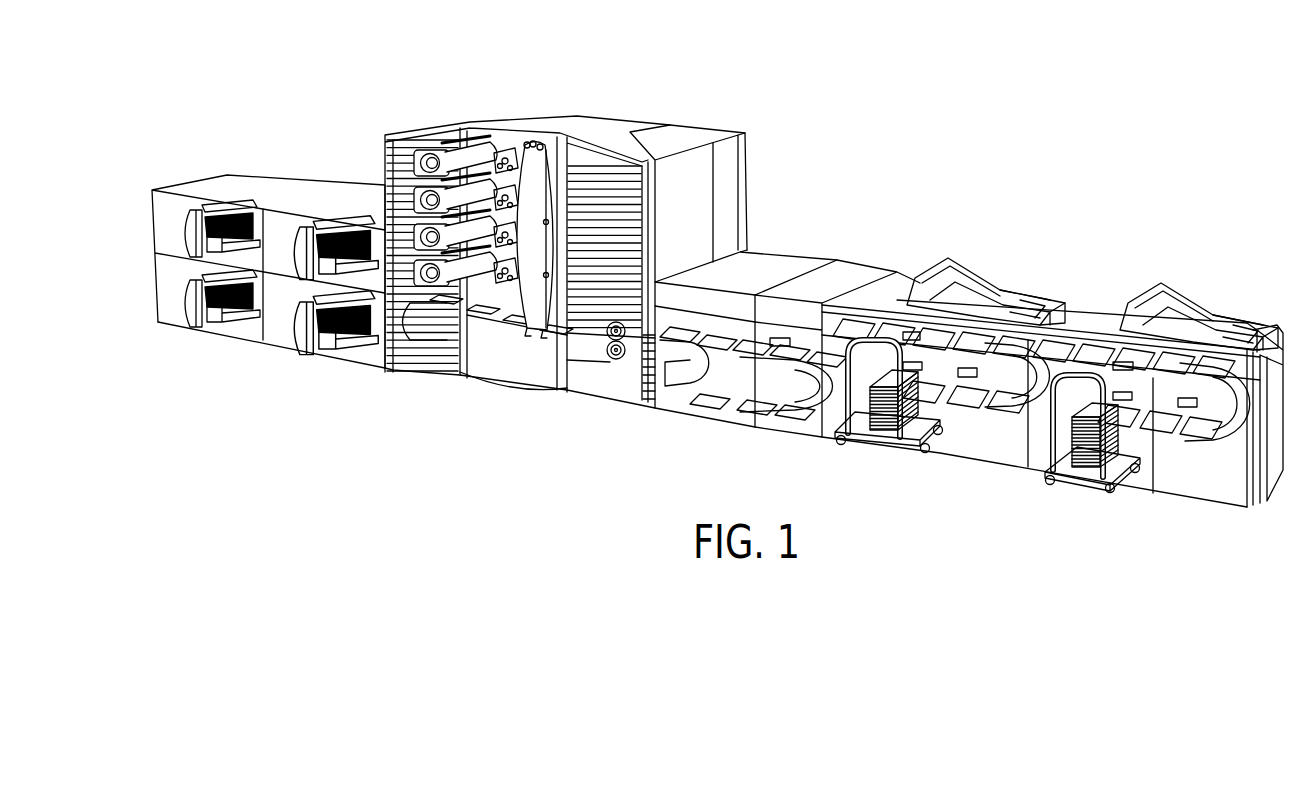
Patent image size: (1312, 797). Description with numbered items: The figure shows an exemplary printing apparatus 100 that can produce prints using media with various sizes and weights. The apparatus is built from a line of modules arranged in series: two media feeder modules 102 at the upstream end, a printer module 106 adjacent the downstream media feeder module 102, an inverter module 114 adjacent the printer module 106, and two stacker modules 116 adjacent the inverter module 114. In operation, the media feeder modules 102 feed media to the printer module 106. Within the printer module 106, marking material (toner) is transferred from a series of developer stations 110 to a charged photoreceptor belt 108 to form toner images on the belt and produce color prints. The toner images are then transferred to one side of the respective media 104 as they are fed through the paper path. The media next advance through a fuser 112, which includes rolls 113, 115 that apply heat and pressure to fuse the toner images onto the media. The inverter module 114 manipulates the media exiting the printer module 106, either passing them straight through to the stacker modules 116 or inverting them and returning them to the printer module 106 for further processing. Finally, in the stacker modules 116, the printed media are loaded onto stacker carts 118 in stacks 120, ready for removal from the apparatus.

The printing apparatus 100 is at (957, 76).
The media feeder module 102 is at (232, 202).
The media 104 is at (273, 217).
The printer module 106 is at (643, 115).
The photoreceptor belt 108 is at (548, 160).
The developer stations 110 is at (445, 148).
The fuser 112 is at (613, 343).
The roll 113 is at (650, 320).
The inverter module 114 is at (848, 272).
The roll 115 is at (630, 356).
The stacker module 116 is at (1087, 310).
The stacker cart 118 is at (873, 447).
The stack 120 is at (870, 417).